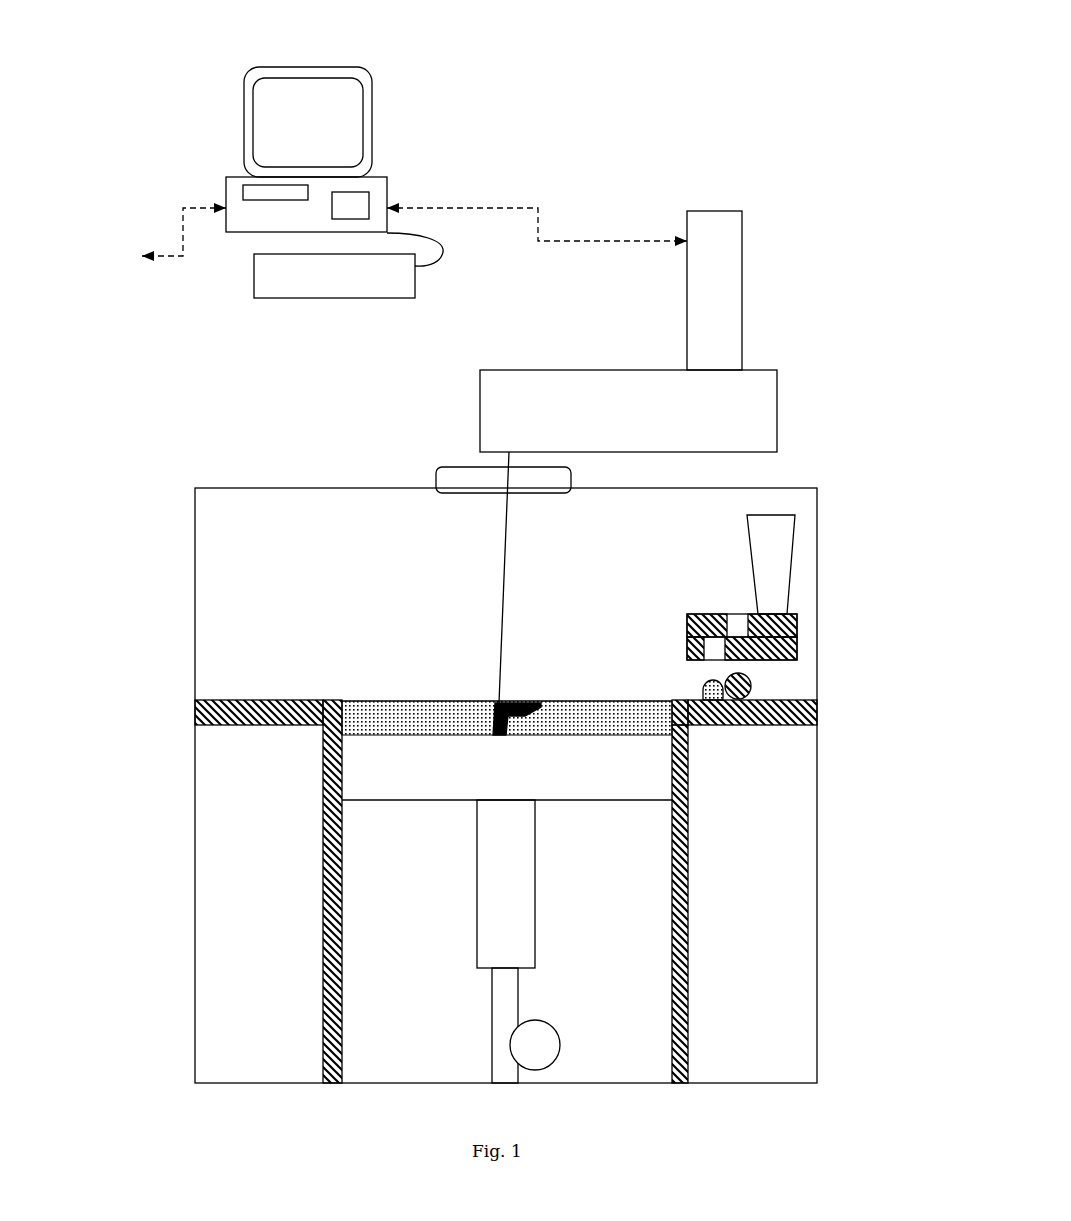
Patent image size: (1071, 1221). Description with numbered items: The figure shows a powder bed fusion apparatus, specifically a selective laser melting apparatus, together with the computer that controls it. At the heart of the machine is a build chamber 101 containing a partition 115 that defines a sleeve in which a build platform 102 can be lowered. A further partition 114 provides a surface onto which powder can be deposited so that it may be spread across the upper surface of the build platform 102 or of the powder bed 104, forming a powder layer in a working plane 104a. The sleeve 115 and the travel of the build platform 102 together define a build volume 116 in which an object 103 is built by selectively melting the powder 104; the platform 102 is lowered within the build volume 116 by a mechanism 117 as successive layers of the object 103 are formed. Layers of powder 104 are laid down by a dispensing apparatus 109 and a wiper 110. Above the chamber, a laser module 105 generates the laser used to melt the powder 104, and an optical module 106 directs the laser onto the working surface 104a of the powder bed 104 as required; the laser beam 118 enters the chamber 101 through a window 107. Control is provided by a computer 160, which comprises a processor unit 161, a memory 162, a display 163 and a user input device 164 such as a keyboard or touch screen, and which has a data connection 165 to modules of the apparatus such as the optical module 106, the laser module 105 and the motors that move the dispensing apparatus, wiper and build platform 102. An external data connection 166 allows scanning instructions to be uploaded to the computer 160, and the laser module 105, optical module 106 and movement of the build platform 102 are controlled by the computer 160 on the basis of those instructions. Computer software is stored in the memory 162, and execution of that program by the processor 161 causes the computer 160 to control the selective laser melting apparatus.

The build chamber 101 is at (195, 559).
The build platform 102 is at (585, 770).
The object 103 is at (505, 737).
The powder bed 104 is at (383, 727).
The working plane 104a is at (375, 695).
The laser module 105 is at (716, 242).
The optical module 106 is at (762, 347).
The window 107 is at (535, 495).
The dispensing apparatus 109 is at (790, 568).
The wiper 110 is at (727, 677).
The further partition 114 is at (780, 698).
The partition 115 is at (688, 932).
The build volume 116 is at (673, 722).
The mechanism 117 is at (547, 1013).
The laser beam 118 is at (497, 617).
The computer 160 is at (223, 98).
The processor unit 161 is at (353, 197).
The memory 162 is at (257, 190).
The display 163 is at (338, 108).
The user input device 164 is at (362, 300).
The communication link 165 is at (527, 237).
The external data connection 166 is at (173, 260).